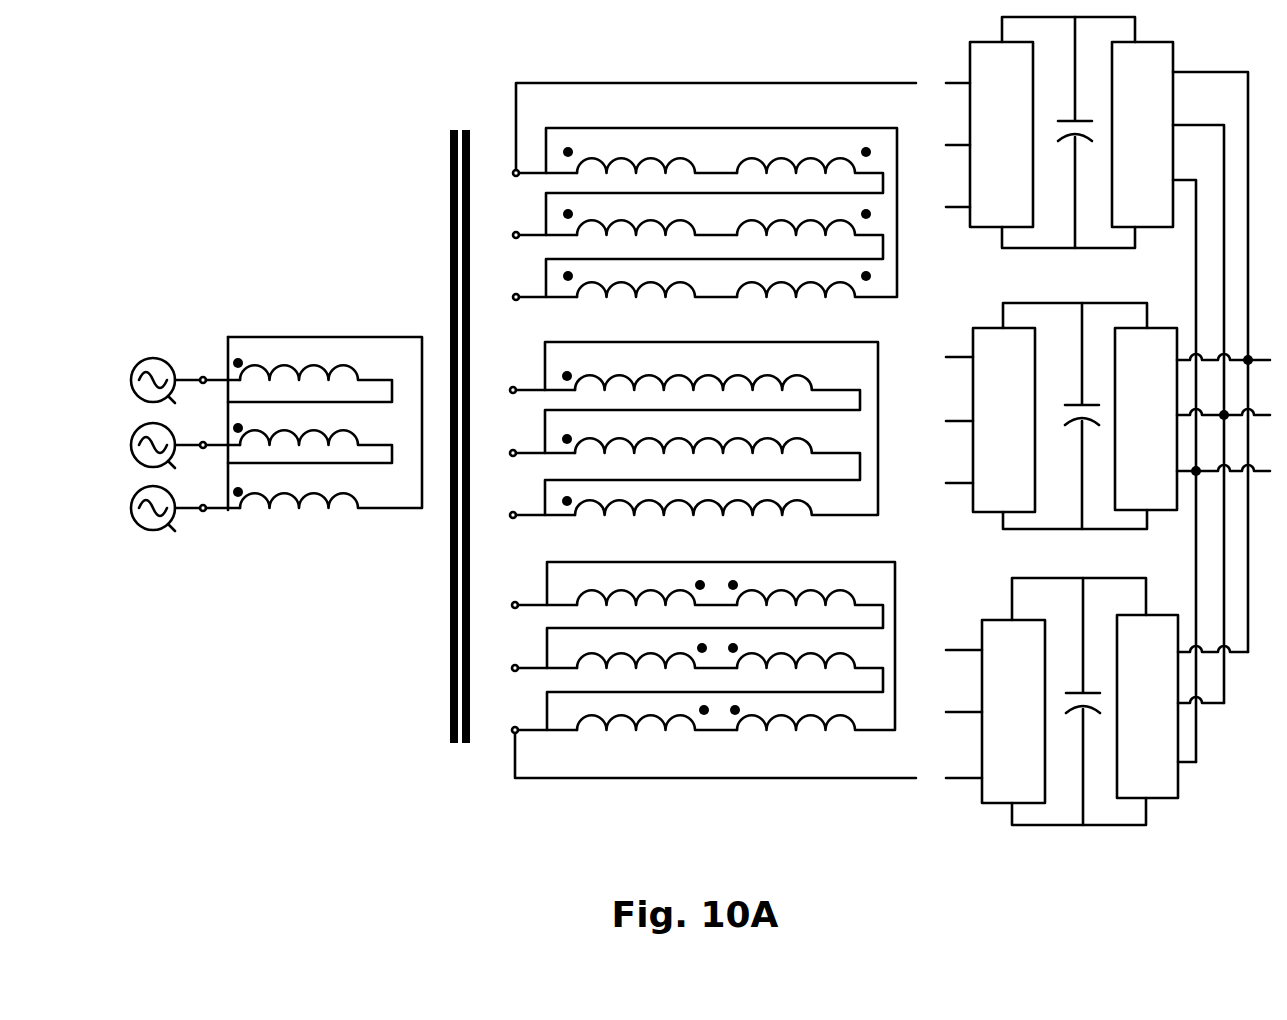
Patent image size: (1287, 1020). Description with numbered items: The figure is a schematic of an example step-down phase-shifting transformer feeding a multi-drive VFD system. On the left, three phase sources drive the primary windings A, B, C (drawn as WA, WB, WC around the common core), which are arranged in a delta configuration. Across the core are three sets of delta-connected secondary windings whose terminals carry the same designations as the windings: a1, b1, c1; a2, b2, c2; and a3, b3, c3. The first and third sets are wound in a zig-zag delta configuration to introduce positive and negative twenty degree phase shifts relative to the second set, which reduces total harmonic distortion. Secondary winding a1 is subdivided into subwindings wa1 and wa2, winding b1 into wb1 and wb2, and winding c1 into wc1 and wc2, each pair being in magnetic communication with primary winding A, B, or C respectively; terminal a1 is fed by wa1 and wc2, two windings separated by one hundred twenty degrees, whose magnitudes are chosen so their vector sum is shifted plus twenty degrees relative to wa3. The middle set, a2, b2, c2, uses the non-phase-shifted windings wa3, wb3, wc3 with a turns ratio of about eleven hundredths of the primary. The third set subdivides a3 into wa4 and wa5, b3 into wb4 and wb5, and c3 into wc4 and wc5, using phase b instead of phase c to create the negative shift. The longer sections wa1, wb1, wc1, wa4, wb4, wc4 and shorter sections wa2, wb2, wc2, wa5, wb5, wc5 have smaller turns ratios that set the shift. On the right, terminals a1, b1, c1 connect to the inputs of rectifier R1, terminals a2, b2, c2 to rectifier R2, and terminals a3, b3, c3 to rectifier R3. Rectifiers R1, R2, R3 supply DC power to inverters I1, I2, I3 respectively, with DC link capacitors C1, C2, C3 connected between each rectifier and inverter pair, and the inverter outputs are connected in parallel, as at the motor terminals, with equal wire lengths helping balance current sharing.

The primary winding A is at (207, 372).
The primary winding B is at (207, 437).
The primary winding C is at (207, 500).
The primary winding A WA is at (310, 376).
The primary winding B WB is at (310, 439).
The primary winding C WC is at (325, 422).
The subwinding wa1 is at (650, 155).
The subwinding wa2 is at (714, 247).
The winding wa3 is at (702, 403).
The subwinding wa4 is at (715, 617).
The subwinding wa5 is at (657, 712).
The subwinding wb1 is at (650, 217).
The subwinding wb2 is at (721, 212).
The winding wb3 is at (702, 466).
The subwinding wb4 is at (715, 680).
The subwinding wb5 is at (657, 587).
The subwinding wc1 is at (650, 279).
The subwinding wc2 is at (714, 185).
The winding wc3 is at (711, 428).
The subwinding wc4 is at (721, 646).
The subwinding wc5 is at (657, 650).
The secondary winding a1 is at (729, 128).
The secondary winding b1 is at (729, 190).
The secondary winding c1 is at (730, 252).
The secondary winding a2 is at (729, 374).
The secondary winding b2 is at (729, 437).
The secondary winding c2 is at (730, 499).
The secondary winding a3 is at (735, 628).
The secondary winding b3 is at (734, 690).
The secondary winding c3 is at (735, 754).
The rectifier R1 is at (1001, 134).
The rectifier R2 is at (1004, 420).
The rectifier R3 is at (1013, 711).
The DC link capacitor C1 is at (1068, 132).
The DC link capacitor C2 is at (1069, 416).
The DC link capacitor C3 is at (1069, 701).
The inverter I1 is at (1142, 134).
The inverter I2 is at (1146, 419).
The inverter I3 is at (1147, 706).